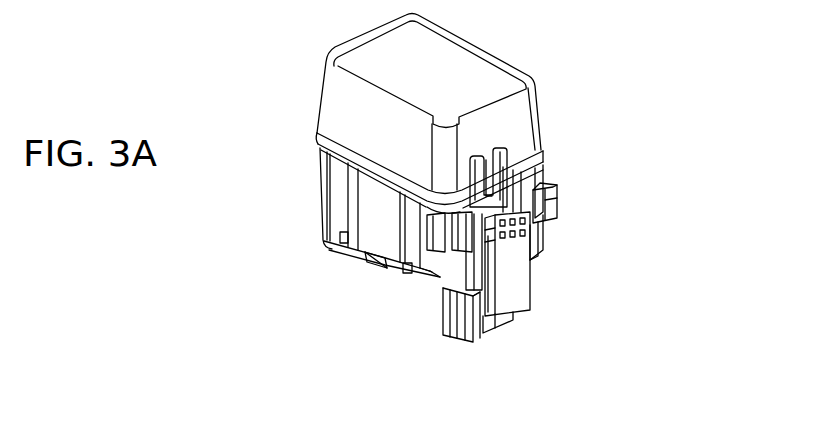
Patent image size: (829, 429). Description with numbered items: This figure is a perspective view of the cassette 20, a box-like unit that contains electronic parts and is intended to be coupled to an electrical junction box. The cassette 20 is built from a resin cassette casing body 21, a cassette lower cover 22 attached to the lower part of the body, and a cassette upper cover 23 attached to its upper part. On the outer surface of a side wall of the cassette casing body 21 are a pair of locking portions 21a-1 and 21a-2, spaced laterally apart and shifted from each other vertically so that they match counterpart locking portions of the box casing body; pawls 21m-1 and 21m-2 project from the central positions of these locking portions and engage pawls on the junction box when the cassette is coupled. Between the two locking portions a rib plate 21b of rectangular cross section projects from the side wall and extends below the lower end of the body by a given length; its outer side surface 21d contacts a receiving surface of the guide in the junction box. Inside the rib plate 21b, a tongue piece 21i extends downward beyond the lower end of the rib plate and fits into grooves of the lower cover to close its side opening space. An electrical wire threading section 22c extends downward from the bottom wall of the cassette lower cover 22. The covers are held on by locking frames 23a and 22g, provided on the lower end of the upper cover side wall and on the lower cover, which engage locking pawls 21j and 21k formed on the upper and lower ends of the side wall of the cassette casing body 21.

The cassette 20 is at (265, 20).
The cassette casing body 21 is at (319, 168).
The locking portion 21a-1 is at (557, 195).
The locking portion 21a-2 is at (411, 279).
The rib plate 21b is at (521, 277).
The outer side surface 21d is at (513, 290).
The tongue piece 21i is at (483, 333).
The locking pawl 21j is at (490, 153).
The locking pawl 21k is at (342, 229).
The pawl 21m-1 is at (534, 238).
The pawl 21m-2 is at (477, 333).
The cassette lower cover 22 is at (328, 241).
The electrical wire threading section 22c is at (447, 330).
The locking frame 22g is at (362, 253).
The cassette upper cover 23 is at (318, 94).
The locking frame 23a is at (501, 157).